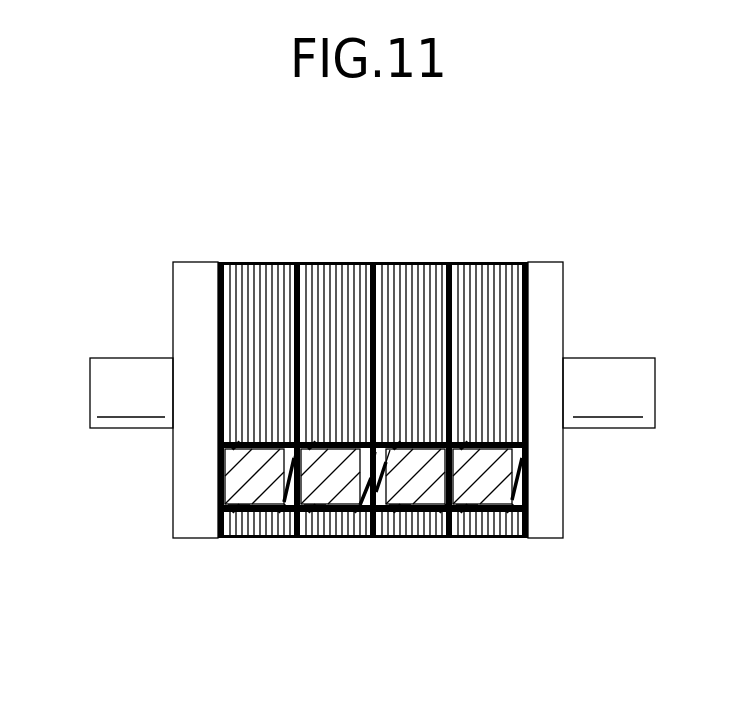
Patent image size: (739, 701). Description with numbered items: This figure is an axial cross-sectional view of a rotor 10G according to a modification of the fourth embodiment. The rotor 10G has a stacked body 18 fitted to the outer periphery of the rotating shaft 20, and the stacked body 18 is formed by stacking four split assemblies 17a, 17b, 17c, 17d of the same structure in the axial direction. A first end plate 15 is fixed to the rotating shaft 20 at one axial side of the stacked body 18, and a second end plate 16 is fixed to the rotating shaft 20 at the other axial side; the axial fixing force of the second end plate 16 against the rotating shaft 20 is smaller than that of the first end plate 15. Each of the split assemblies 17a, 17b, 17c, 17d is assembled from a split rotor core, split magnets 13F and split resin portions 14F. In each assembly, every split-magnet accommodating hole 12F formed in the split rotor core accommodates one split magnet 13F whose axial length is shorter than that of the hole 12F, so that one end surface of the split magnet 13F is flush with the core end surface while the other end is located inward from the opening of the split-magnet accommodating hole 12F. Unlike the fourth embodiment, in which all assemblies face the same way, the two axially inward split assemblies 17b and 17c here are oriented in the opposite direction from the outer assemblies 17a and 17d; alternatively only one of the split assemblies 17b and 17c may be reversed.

The rotor 10G is at (532, 213).
The first end plate 15 is at (545, 262).
The second end plate 16 is at (193, 262).
The stacked body 18 is at (502, 165).
The split assembly 17a is at (265, 288).
The split assembly 17b is at (331, 288).
The split assembly 17c is at (404, 288).
The split assembly 17d is at (480, 288).
The rotating shaft 20 is at (107, 343).
The split-magnet accommodating hole 12F is at (235, 508).
The split magnet 13F is at (234, 512).
The split resin portion 14F is at (288, 483).